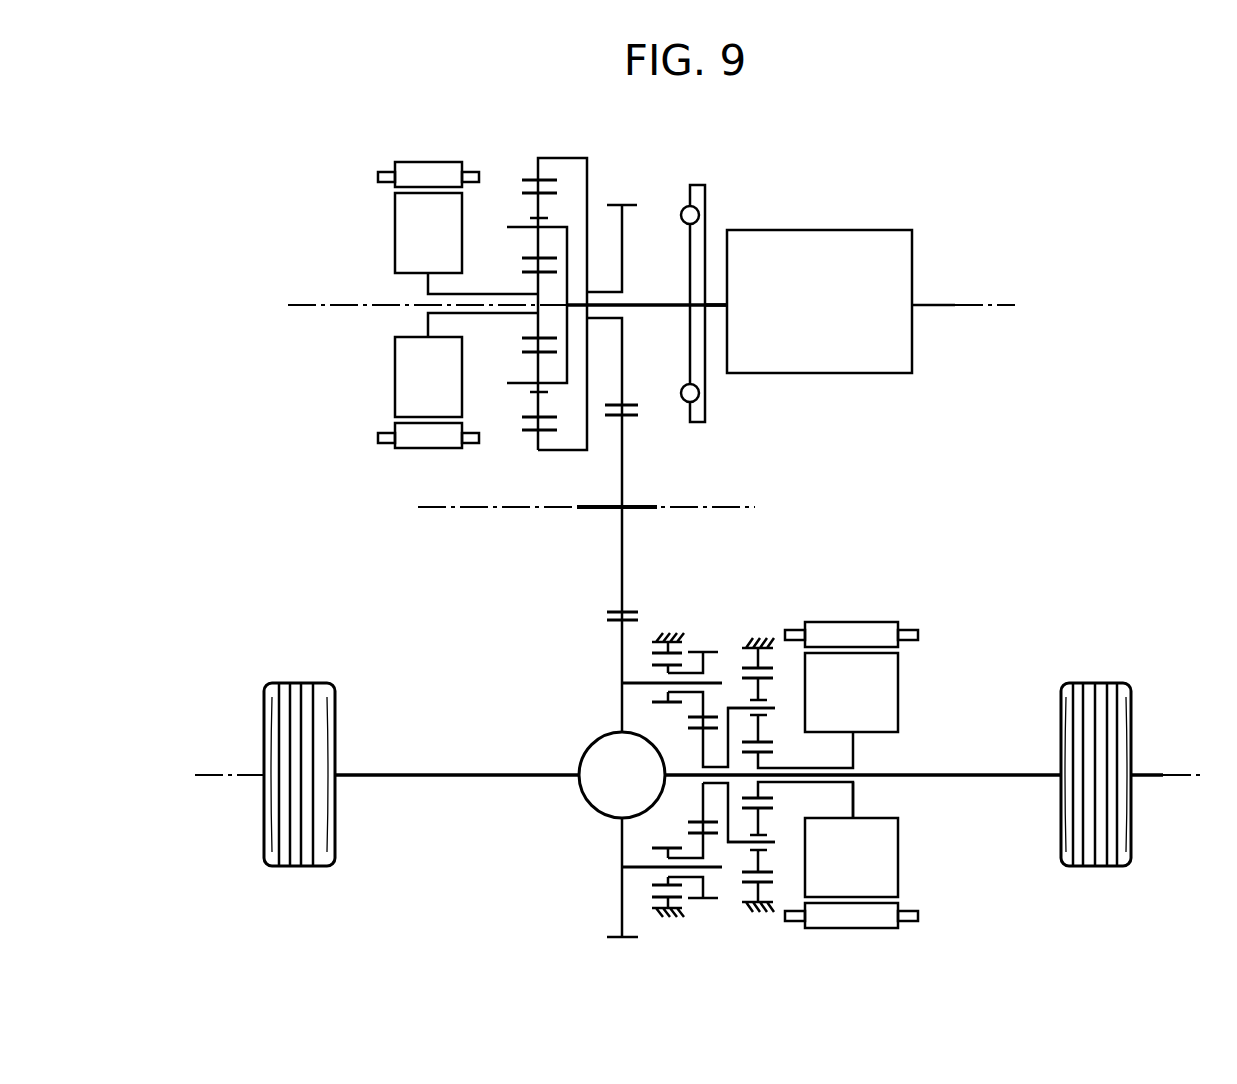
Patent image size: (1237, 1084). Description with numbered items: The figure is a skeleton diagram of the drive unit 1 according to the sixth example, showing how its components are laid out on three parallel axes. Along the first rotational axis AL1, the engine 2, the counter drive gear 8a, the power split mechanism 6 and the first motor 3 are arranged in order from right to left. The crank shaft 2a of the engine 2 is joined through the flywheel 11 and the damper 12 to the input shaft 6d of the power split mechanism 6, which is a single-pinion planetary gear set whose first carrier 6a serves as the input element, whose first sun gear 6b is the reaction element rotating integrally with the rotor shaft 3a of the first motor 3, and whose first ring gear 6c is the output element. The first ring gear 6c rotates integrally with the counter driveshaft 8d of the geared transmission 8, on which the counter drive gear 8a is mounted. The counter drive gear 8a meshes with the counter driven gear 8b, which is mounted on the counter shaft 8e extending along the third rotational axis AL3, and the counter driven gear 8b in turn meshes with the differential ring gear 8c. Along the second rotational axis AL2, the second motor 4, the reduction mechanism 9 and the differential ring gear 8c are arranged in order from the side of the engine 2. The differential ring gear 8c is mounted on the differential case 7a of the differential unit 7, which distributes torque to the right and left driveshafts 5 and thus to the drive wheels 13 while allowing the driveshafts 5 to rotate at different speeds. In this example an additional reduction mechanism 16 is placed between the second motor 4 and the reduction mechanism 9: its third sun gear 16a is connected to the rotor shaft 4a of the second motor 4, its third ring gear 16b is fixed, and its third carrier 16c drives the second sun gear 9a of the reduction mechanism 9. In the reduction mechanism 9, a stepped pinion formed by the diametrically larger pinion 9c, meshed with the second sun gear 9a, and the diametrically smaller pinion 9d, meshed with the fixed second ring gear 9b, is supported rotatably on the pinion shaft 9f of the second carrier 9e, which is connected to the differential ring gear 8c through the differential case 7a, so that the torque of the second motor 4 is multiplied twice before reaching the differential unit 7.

The drive unit 1 is at (986, 185).
The engine 2 is at (816, 230).
The crank shaft 2a is at (708, 308).
The first motor 3 is at (362, 187).
The rotor shaft of the first motor 3a is at (488, 316).
The second motor 4 is at (944, 614).
The rotor shaft of the second motor 4a is at (823, 783).
The driveshafts 5 is at (749, 796).
The power split mechanism 6 is at (521, 141).
The first carrier 6a is at (528, 226).
The first sun gear 6b is at (530, 268).
The first ring gear 6c is at (528, 422).
The input shaft 6d is at (668, 302).
The differential unit 7 is at (569, 726).
The differential case 7a is at (590, 812).
The geared transmission 8 is at (676, 479).
The counter drive gear 8a is at (627, 204).
The counter driven gear 8b is at (628, 415).
The differential ring gear 8c is at (606, 615).
The counter driveshaft 8d is at (607, 319).
The counter shaft 8e is at (590, 512).
The reduction mechanism 9 is at (677, 601).
The second sun gear 9a is at (690, 727).
The second ring gear 9b is at (685, 910).
The diametrically larger pinion 9c is at (700, 652).
The diametrically smaller pinion 9d is at (652, 661).
The second carrier 9e is at (640, 868).
The pinion shaft 9f is at (645, 684).
The flywheel 11 is at (741, 282).
The damper 12 is at (724, 189).
The drive wheel 13 is at (292, 867).
The additional reduction mechanism 16 is at (784, 591).
The third sun gear 16a is at (775, 748).
The third ring gear 16b is at (742, 668).
The third carrier 16c is at (730, 850).
The first rotational axis AL1 is at (308, 308).
The second rotational axis AL2 is at (215, 768).
The third rotational axis AL3 is at (448, 512).